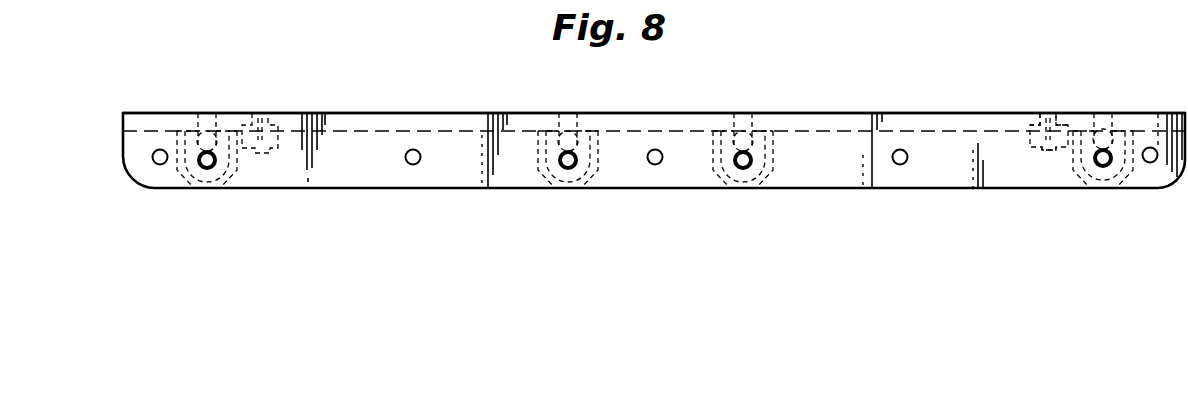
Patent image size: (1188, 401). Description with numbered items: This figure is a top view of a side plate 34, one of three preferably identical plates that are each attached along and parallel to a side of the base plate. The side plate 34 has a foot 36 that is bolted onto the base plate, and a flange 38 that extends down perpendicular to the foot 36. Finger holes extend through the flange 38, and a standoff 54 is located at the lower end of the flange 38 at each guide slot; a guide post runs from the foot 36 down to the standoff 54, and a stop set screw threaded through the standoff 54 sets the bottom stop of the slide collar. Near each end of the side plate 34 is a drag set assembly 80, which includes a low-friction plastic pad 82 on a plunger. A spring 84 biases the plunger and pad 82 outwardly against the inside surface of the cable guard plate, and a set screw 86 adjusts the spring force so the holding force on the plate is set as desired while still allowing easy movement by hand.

The side plate 34 is at (945, 178).
The foot 36 is at (835, 168).
The flange 38 is at (345, 123).
The standoff 54 is at (595, 190).
The drag set assembly 80 is at (266, 165).
The pad 82 is at (1063, 115).
The spring 84 is at (1028, 122).
The set screw 86 is at (1050, 148).